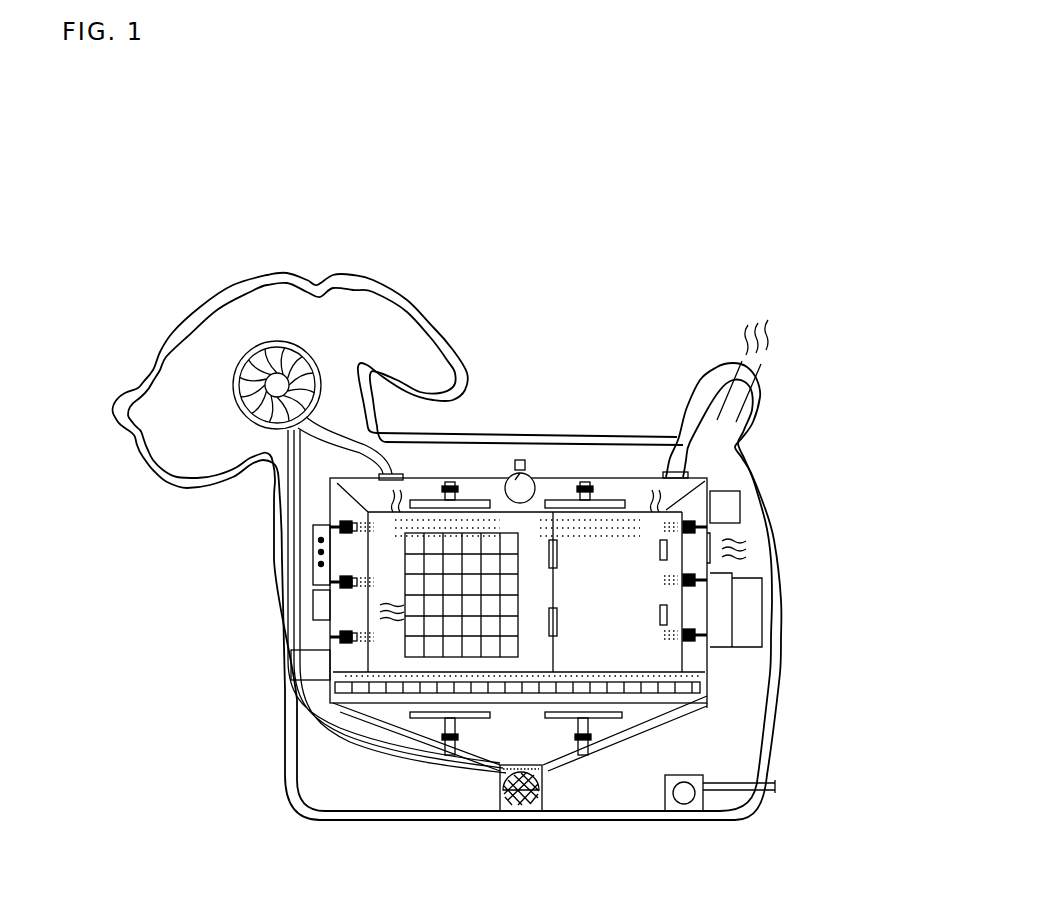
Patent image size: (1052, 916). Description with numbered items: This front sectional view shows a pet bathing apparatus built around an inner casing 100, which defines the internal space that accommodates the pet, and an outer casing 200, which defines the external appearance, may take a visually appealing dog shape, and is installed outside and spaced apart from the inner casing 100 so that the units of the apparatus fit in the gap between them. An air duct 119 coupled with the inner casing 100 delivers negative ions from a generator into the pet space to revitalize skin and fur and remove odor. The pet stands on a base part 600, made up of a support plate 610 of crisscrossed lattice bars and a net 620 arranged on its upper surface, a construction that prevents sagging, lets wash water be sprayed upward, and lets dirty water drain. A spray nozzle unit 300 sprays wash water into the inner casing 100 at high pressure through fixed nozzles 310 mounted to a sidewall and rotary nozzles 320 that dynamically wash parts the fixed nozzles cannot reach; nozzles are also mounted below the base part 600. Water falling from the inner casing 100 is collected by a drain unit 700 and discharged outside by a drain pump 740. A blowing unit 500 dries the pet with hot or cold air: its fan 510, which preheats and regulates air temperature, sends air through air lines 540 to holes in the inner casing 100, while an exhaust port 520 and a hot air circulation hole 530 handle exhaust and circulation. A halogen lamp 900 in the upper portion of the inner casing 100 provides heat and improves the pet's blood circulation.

The inner casing 100 is at (712, 604).
The air duct 119 is at (690, 477).
The outer casing 200 is at (173, 337).
The spray nozzle unit 300 is at (499, 618).
The fixed nozzles 310 is at (338, 582).
The rotary nozzles 320 is at (338, 645).
The blowing unit 500 is at (480, 466).
The fan 510 is at (280, 387).
The exhaust port 520 is at (727, 402).
The hot air circulation hole 530 is at (685, 548).
The air lines 540 is at (360, 740).
The base part 600 is at (703, 742).
The support plate 610 is at (700, 693).
The net 620 is at (690, 681).
The drain unit 700 is at (320, 727).
The drain pump 740 is at (778, 787).
The halogen lamp 900 is at (521, 480).